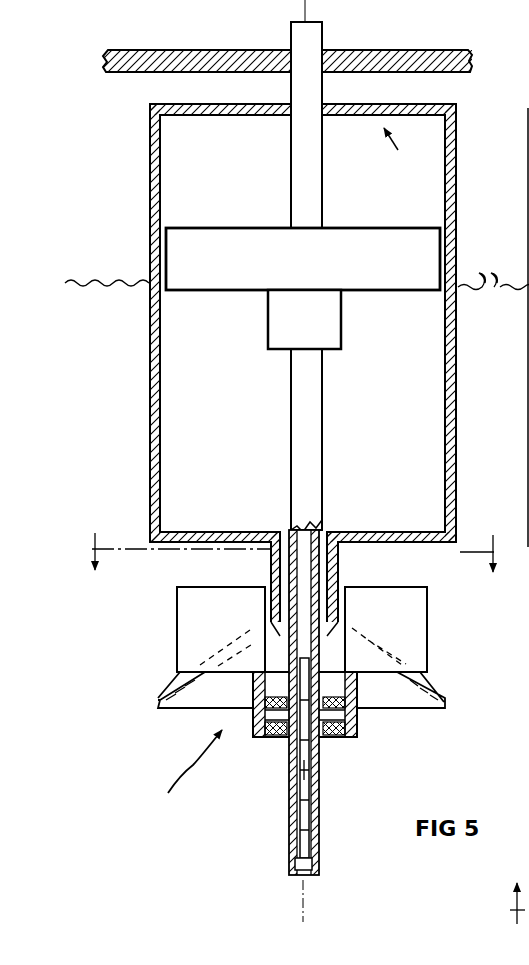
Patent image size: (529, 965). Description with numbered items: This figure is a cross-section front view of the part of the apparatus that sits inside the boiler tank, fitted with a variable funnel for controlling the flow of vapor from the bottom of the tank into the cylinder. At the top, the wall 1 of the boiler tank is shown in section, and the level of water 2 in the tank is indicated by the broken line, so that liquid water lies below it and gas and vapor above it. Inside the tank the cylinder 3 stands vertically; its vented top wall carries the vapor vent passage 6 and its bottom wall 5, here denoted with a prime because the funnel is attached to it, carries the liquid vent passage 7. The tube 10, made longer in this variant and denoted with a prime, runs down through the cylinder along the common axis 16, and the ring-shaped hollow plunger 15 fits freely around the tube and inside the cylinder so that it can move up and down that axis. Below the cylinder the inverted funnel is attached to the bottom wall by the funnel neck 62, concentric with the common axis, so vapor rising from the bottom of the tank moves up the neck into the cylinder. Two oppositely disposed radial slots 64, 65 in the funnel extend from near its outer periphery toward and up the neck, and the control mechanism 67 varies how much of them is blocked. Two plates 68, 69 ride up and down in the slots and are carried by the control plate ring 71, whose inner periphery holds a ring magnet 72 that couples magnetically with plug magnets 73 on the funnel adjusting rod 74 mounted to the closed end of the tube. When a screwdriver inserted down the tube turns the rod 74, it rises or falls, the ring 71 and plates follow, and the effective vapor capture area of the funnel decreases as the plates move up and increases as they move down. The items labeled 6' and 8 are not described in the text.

The wall of the boiler tank 1 is at (383, 50).
The level of water 2 is at (96, 283).
The cylinder 3 is at (148, 182).
The bottom wall 5 is at (233, 485).
The vapor vent passage 6 is at (400, 147).
The lower chamber 6' is at (516, 731).
The liquid vent passage 7 is at (294, 555).
The section direction 8 is at (509, 903).
The tube 10 is at (375, 150).
The hollow plunger 15 is at (219, 218).
The common axis 16 is at (303, 890).
The funnel neck 62 is at (341, 563).
The radial slot 64 is at (178, 686).
The radial slot 65 is at (428, 678).
The control mechanism 67 is at (182, 781).
The plate 68 is at (177, 588).
The plate 69 is at (427, 588).
The control plate ring 71 is at (255, 731).
The ring magnet 72 is at (320, 737).
The plug magnet 73 is at (322, 745).
The funnel adjusting rod 74 is at (300, 683).